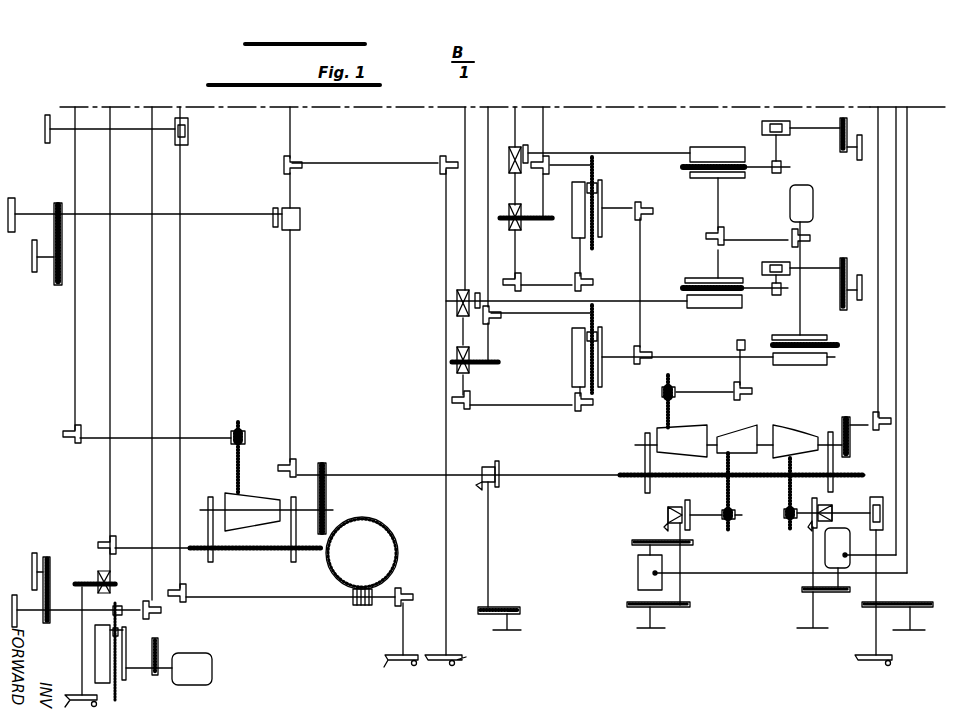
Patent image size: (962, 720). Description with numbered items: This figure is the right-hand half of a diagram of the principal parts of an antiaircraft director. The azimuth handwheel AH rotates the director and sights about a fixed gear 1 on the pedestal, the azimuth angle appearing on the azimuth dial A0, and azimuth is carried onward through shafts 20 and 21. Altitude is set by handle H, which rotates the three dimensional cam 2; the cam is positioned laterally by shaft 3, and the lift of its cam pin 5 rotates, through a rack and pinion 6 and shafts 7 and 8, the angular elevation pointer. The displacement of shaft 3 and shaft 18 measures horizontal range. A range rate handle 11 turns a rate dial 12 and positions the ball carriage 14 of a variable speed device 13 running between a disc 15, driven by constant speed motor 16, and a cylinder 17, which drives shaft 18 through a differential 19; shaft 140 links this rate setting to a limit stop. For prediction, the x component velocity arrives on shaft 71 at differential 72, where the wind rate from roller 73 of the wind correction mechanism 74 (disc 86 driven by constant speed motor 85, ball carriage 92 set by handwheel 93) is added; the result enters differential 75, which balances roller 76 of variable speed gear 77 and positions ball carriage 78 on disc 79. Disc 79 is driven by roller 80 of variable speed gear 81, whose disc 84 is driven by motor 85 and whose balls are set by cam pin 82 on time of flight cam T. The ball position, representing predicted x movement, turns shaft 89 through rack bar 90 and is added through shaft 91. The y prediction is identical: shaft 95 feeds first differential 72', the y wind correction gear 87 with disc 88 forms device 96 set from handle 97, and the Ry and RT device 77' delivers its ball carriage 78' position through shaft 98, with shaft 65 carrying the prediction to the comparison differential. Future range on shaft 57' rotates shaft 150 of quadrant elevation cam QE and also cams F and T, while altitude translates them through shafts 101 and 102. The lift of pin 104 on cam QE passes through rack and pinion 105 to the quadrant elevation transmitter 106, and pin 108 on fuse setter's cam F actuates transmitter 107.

The azimuth dial A0 is at (45, 118).
The shaft 101 is at (290, 190).
The shaft 21 is at (180, 312).
The shaft 8 is at (75, 355).
The shaft 140 is at (152, 348).
The shaft 18 is at (110, 477).
The shaft 7 is at (188, 438).
The rack and pinion 6 is at (244, 431).
The cam pin 5 is at (235, 466).
The three dimensional cam 2 is at (252, 500).
The shaft 3 is at (240, 549).
The range rate handle 11 is at (25, 571).
The rate dial 12 is at (43, 557).
The differential 19 is at (99, 633).
The cylinder 17 is at (95, 646).
The variable speed device 13 is at (127, 659).
The ball carriage 14 is at (128, 628).
The disc 15 is at (149, 658).
The constant speed motor 16 is at (210, 685).
The shaft 20 is at (273, 598).
The fixed gear 1 is at (362, 553).
The azimuth handwheel AH is at (392, 642).
The altitude handle H is at (453, 419).
The shaft 95 is at (465, 131).
The shaft 65 is at (477, 233).
The shaft 71 is at (515, 131).
The shaft 91 is at (545, 131).
The differential 72 is at (591, 171).
The rack bar 90 is at (598, 153).
The shaft 89 is at (560, 166).
The differential 75 is at (521, 226).
The roller 76 is at (572, 236).
The ball carriage 78 is at (612, 203).
The variable speed gear 77 is at (607, 263).
The disc 79 is at (604, 196).
The roller 73 is at (706, 150).
The ball carriage 92 is at (688, 178).
The disc 86 is at (758, 256).
The wind correction mechanism 74 is at (792, 147).
The handwheel 93 is at (849, 151).
The constant speed motor 85 is at (813, 216).
The disc 88 is at (696, 278).
The y wind correction gear 87 is at (683, 287).
The y wind correction device 96 is at (742, 303).
The handle 97 is at (805, 279).
The first differential 72' is at (448, 294).
The shaft 98 is at (537, 313).
The Ry and RT device 77' is at (595, 375).
The ball carriage 78' is at (609, 349).
The disc 84 is at (808, 335).
The variable speed gear 81 is at (817, 346).
The roller 80 is at (827, 365).
The cam pin 82 is at (664, 404).
The shaft 57' is at (905, 366).
The shaft 102 is at (545, 474).
The time of flight cam T is at (682, 449).
The quadrant elevation cam QE is at (737, 430).
The shaft 150 is at (765, 436).
The fuse setter's cam F is at (800, 429).
The rack and pinion 105 is at (736, 513).
The pin 104 is at (722, 497).
The pin 108 is at (804, 495).
The quadrant elevation transmitter 106 is at (638, 572).
The transmitter 107 is at (825, 558).